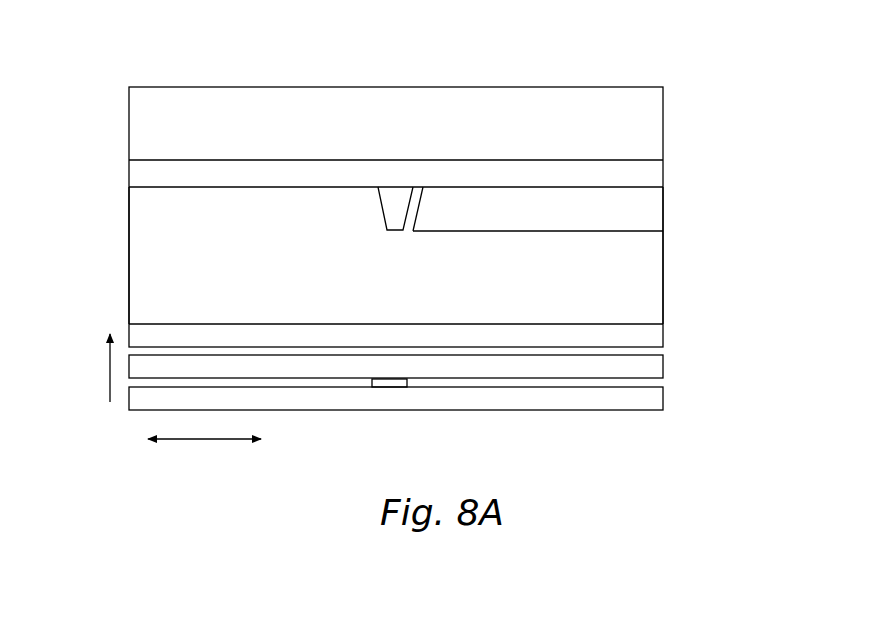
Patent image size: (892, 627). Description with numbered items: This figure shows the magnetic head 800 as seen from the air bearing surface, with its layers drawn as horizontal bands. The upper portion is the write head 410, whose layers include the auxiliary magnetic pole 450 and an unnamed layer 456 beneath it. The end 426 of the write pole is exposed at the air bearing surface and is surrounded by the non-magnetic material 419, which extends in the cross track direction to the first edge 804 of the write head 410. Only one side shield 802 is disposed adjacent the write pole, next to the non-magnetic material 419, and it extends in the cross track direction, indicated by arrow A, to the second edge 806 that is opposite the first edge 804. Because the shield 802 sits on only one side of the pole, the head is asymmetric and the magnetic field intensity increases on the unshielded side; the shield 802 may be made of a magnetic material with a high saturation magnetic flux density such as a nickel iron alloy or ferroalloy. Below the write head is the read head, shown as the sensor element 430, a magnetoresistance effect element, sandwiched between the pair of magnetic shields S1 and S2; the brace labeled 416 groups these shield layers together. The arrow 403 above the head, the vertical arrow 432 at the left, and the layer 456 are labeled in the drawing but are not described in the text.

The magnetic head 800 is at (207, 37).
The incident light direction 403 is at (402, 81).
The auxiliary magnetic pole 450 is at (656, 113).
The intermediate layer 456 is at (656, 173).
The side shield 802 is at (656, 213).
The end of the write pole 426 is at (394, 220).
The non-magnetic material 419 is at (298, 272).
The first edge 804 is at (129, 280).
The second edge 806 is at (665, 280).
The write head 410 is at (655, 336).
The magnetic shield S2 is at (655, 369).
The magnetic shield S1 is at (655, 399).
The sensor stack 416 is at (731, 350).
The sensor element 430 is at (389, 387).
The vertical direction arrow 432 is at (110, 366).
The cross track direction arrow A is at (204, 456).